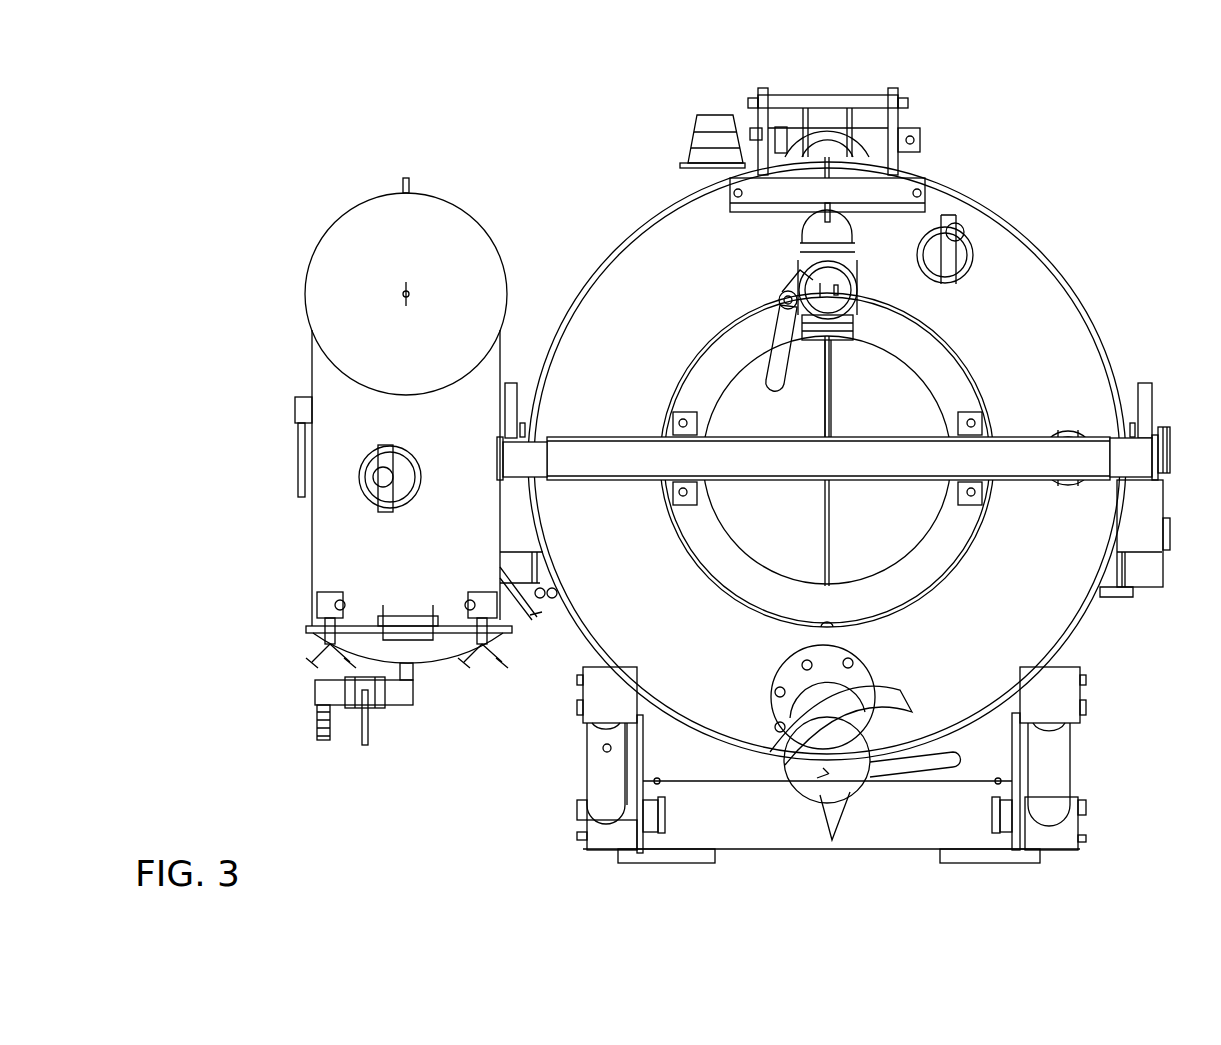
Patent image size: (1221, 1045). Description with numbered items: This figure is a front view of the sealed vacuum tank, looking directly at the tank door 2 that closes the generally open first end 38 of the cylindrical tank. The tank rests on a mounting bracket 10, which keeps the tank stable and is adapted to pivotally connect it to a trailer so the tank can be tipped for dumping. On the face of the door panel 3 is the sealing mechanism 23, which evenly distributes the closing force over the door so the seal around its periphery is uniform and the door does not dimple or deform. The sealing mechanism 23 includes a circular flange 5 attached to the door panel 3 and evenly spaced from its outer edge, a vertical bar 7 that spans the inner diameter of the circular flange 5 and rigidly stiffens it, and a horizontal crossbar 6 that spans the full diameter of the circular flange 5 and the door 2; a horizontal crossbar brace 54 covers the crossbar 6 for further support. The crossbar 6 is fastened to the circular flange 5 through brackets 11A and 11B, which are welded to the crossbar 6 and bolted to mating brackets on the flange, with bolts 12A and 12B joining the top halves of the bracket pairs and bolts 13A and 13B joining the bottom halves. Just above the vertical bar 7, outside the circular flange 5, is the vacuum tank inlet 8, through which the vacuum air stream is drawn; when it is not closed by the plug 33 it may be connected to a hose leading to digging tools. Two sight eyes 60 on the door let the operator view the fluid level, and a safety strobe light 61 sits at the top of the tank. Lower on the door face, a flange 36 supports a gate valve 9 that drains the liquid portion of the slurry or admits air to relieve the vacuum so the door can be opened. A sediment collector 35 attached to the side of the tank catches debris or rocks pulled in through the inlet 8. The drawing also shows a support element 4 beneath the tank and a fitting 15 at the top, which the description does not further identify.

The tank door 2 is at (801, 416).
The door panel 3 is at (670, 657).
The saddle support 4 is at (1012, 705).
The circular flange 5 is at (977, 537).
The horizontal crossbar 6 is at (1118, 450).
The vertical bar 7 is at (830, 510).
The vacuum tank inlet 8 is at (911, 281).
The gate valve 9 is at (987, 777).
The mounting bracket 10 is at (938, 832).
The bracket 11A is at (980, 427).
The bracket 11B is at (673, 417).
The bolt 12A is at (973, 423).
The bolt 12B is at (683, 423).
The bolt 13A is at (975, 495).
The bolt 13B is at (683, 494).
The lifting frame 15 is at (868, 103).
The sealing mechanism 23 is at (927, 410).
The plug 33 is at (837, 288).
The sediment collector 35 is at (337, 553).
The flange 36 is at (773, 702).
The first end 38 is at (673, 200).
The horizontal crossbar brace 54 is at (623, 453).
The sight eyes 60 is at (967, 252).
The safety strobe light 61 is at (713, 122).